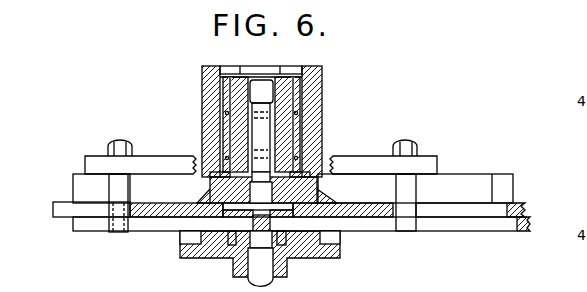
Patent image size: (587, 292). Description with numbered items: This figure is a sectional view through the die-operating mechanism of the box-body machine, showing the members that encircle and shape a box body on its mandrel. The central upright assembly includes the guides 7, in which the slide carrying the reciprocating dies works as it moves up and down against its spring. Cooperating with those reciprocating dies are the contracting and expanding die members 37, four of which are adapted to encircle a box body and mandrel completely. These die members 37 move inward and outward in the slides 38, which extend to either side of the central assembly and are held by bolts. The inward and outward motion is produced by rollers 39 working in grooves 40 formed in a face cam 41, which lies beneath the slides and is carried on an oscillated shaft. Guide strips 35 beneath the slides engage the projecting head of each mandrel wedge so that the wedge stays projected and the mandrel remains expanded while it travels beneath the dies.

The guides 7 is at (322, 100).
The contracting and expanding die members 37 is at (203, 101).
The slides 38 is at (97, 183).
The guide strips 35 is at (200, 198).
The rollers 39 is at (230, 245).
The grooves 40 is at (185, 236).
The face cam 41 is at (340, 254).